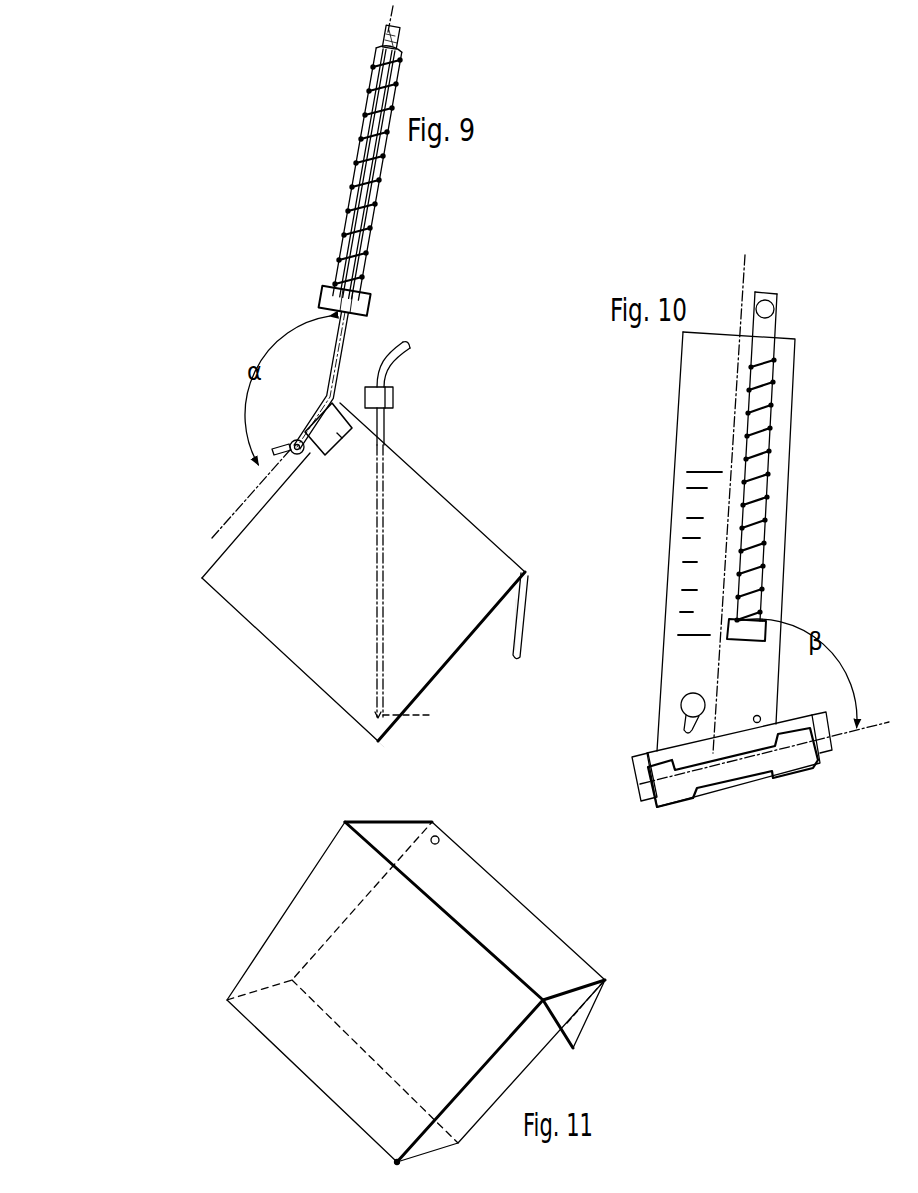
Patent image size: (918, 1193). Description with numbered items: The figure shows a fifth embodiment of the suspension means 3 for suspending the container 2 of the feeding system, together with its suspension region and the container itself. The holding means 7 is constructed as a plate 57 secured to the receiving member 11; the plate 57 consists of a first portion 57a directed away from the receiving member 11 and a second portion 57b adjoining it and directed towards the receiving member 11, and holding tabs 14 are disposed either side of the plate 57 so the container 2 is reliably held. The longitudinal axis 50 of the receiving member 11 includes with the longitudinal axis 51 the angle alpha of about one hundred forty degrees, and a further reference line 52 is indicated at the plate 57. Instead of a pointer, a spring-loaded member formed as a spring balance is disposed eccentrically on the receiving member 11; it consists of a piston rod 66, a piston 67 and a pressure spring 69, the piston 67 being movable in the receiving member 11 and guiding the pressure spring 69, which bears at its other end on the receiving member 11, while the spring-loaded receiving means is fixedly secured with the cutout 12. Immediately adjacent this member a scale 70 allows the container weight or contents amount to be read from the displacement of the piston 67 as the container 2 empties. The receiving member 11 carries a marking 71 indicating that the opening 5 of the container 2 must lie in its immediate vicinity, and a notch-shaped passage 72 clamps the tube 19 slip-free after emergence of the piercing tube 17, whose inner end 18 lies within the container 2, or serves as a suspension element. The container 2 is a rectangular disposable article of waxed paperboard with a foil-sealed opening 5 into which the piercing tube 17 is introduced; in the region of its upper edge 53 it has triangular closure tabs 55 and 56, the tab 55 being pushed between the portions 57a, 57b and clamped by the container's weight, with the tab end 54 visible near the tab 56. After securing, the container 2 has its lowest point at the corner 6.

In FIG. 9, the container 2 is at (440, 513).
In FIG. 11, the container 2 is at (398, 983).
In FIG. 9, the suspension means 3 is at (300, 298).
In FIG. 9, the opening 5 is at (388, 446).
In FIG. 11, the opening 5 is at (441, 838).
In FIG. 9, the corner 6 is at (383, 744).
In FIG. 11, the corner 6 is at (395, 1162).
In FIG. 9, the holding means 7 is at (302, 408).
In FIG. 9, the receiving member 11 is at (367, 123).
In FIG. 10, the receiving member 11 is at (685, 393).
In FIG. 10, the cutout 12 is at (775, 310).
In FIG. 9, the holding tabs 14 is at (338, 440).
In FIG. 10, the holding tabs 14 is at (640, 788).
In FIG. 9, the piercing tube 17 is at (376, 545).
In FIG. 9, the end of fold line 18 is at (416, 717).
In FIG. 9, the tube 19 is at (403, 340).
In FIG. 9, the longitudinal axis 50 is at (392, 18).
In FIG. 10, the longitudinal axis 50 is at (740, 272).
In FIG. 9, the longitudinal axis 51 is at (225, 505).
In FIG. 10, the reference line 52 is at (889, 722).
In FIG. 9, the upper edge 53 is at (350, 403).
In FIG. 9, the flap end 54 is at (524, 570).
In FIG. 9, the tab 55 is at (285, 445).
In FIG. 11, the tab 55 is at (358, 829).
In FIG. 9, the tab 56 is at (520, 640).
In FIG. 11, the tab 56 is at (578, 1025).
In FIG. 10, the plate 57 is at (717, 780).
In FIG. 9, the first portion 57a is at (312, 410).
In FIG. 10, the first portion 57a is at (648, 753).
In FIG. 9, the second portion 57b is at (318, 452).
In FIG. 10, the second portion 57b is at (680, 793).
In FIG. 9, the piston rod 66 is at (374, 75).
In FIG. 10, the piston rod 66 is at (768, 411).
In FIG. 9, the piston 67 is at (322, 297).
In FIG. 10, the piston 67 is at (728, 630).
In FIG. 9, the pressure spring 69 is at (352, 160).
In FIG. 10, the pressure spring 69 is at (778, 462).
In FIG. 10, the scale 70 is at (682, 568).
In FIG. 10, the marking 71 is at (761, 718).
In FIG. 10, the notch-shaped passage 72 is at (680, 705).